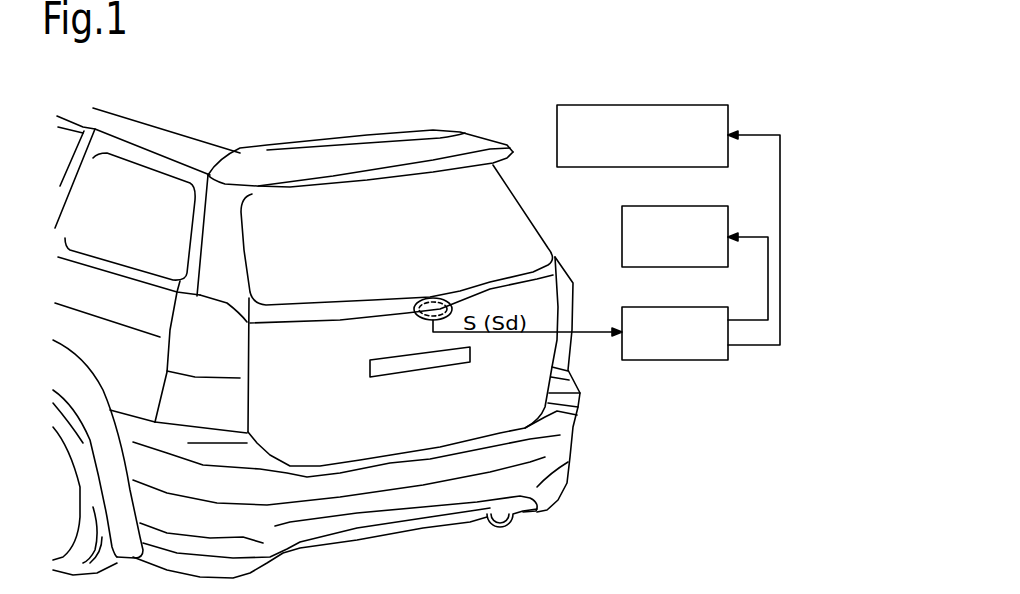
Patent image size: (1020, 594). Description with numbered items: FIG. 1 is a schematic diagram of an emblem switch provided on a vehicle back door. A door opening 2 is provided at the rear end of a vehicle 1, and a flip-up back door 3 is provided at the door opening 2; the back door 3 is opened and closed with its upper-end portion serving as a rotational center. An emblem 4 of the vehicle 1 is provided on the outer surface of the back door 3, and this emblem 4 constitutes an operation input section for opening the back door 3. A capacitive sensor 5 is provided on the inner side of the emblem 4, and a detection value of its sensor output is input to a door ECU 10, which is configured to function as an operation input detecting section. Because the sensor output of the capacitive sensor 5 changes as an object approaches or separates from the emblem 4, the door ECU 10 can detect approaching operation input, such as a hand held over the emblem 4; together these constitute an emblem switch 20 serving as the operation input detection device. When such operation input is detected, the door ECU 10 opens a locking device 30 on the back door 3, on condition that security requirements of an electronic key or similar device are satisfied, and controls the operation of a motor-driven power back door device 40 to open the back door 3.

The vehicle 1 is at (485, 100).
The door opening 2 is at (250, 358).
The back door 3 is at (517, 400).
The emblem 4 is at (420, 323).
The capacitive sensor 5 is at (430, 293).
The door ECU 10 is at (683, 305).
The emblem switch 20 is at (700, 428).
The locking device 30 is at (683, 205).
The power back door device 40 is at (683, 104).